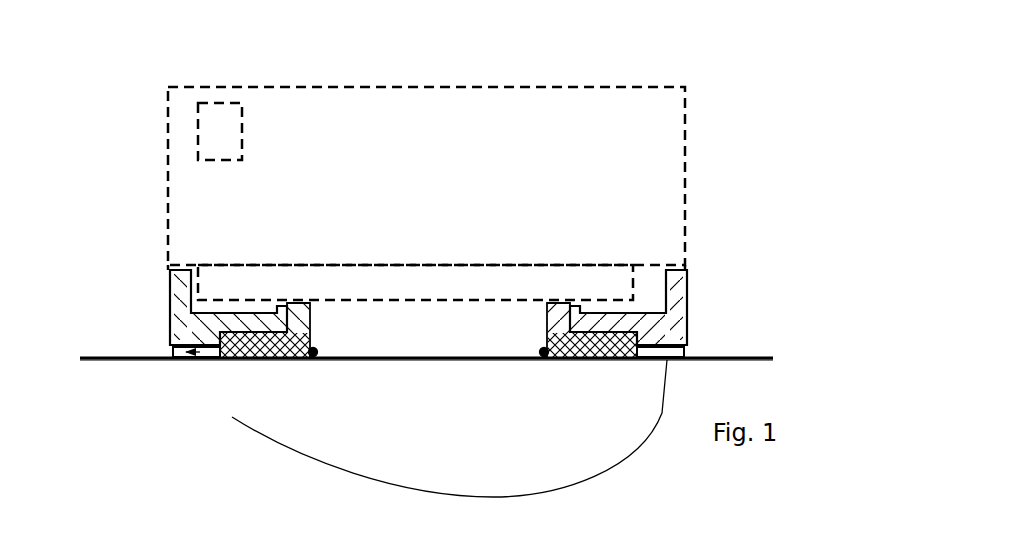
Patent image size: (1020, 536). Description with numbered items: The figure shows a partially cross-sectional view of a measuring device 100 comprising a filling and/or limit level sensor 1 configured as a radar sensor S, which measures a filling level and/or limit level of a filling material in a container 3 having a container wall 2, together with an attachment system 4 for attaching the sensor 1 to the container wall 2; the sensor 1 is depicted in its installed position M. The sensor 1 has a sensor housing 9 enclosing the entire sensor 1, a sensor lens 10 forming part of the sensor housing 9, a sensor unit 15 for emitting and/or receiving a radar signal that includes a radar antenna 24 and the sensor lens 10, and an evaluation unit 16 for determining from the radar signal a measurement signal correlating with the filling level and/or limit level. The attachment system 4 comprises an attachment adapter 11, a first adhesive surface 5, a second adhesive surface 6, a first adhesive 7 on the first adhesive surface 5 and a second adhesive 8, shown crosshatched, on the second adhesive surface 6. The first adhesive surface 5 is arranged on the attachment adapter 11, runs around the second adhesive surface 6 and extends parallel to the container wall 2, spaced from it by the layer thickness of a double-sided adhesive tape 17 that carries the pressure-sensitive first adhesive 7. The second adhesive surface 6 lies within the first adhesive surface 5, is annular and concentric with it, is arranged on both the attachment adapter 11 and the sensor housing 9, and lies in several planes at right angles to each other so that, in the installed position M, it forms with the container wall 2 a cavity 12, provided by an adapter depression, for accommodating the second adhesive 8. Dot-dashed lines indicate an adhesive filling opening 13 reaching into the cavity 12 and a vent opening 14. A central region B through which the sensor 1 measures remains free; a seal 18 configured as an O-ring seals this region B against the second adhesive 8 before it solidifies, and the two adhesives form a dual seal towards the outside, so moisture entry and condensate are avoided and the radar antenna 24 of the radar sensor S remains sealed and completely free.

The measuring device 100 is at (724, 76).
The filling and/or limit level sensor 1 is at (740, 142).
The attachment system 4 is at (724, 217).
The radar sensor S is at (278, 115).
The installed position M is at (150, 159).
The region that remains free B is at (375, 352).
The evaluation unit 16 is at (217, 135).
The sensor housing 9 is at (168, 237).
The attachment adapter 11 is at (215, 348).
The adhesive filling opening 13 is at (222, 340).
The first adhesive surface 5 is at (190, 360).
The second adhesive surface 6 is at (560, 325).
The seal 18 is at (540, 358).
The vent opening 14 is at (722, 306).
The second adhesive 8 is at (575, 345).
The cavity 12 is at (613, 347).
The first adhesive 7 is at (640, 340).
The double-sided adhesive tape 17 is at (688, 360).
The container wall 2 is at (92, 359).
The container 3 is at (132, 359).
The sensor lens 10 is at (490, 353).
The radar antenna 24 is at (429, 301).
The sensor unit 15 is at (487, 313).